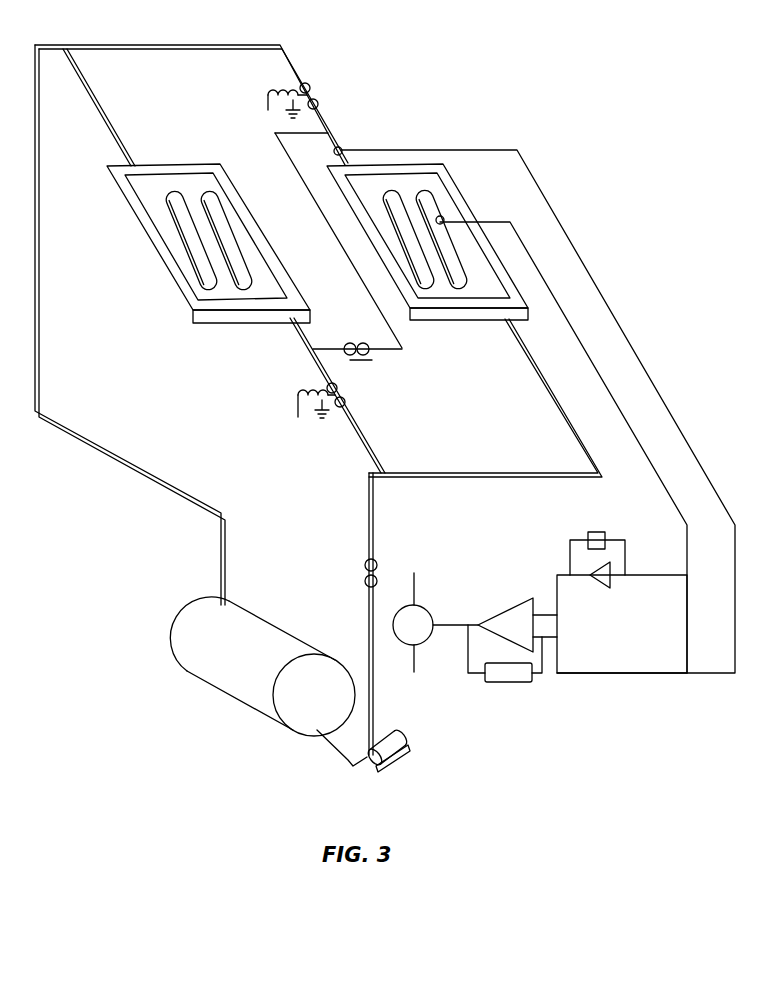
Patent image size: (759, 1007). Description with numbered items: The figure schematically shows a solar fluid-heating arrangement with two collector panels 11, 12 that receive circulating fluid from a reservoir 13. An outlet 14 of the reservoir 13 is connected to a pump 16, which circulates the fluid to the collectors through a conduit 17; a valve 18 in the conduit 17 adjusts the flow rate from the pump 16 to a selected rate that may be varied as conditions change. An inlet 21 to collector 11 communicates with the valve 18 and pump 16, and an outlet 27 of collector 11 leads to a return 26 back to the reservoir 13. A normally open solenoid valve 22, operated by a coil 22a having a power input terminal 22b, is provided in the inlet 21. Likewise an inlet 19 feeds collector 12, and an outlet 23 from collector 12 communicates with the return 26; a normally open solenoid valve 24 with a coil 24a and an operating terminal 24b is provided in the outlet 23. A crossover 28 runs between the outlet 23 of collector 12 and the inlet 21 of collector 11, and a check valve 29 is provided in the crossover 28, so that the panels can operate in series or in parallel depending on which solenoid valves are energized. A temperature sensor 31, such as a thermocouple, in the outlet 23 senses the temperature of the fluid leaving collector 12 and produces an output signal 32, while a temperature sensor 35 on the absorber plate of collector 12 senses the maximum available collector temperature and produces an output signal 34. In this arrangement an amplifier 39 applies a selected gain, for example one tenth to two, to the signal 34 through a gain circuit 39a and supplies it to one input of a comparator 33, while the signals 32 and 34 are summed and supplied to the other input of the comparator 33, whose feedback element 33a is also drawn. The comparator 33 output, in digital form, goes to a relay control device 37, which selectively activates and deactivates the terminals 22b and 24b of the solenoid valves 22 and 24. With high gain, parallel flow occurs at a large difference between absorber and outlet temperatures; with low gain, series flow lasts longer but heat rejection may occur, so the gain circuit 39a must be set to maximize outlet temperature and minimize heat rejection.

The collector panel 11 is at (147, 203).
The collector panel 12 is at (458, 282).
The reservoir 13 is at (262, 666).
The outlet 14 is at (335, 748).
The pump 16 is at (395, 760).
The conduit 17 is at (368, 620).
The valve 18 is at (364, 570).
The inlet 19 is at (530, 362).
The inlet 21 is at (300, 340).
The normally open solenoid valve 22 is at (350, 388).
The coil 22a is at (300, 390).
The power input terminal 22b is at (297, 417).
The outlet 23 is at (318, 106).
The normally open solenoid valve 24 is at (348, 78).
The coil 24a is at (284, 90).
The operating terminal 24b is at (266, 111).
The return 26 is at (205, 44).
The outlet 27 is at (137, 93).
The crossover 28 is at (297, 172).
The check valve 29 is at (360, 344).
The temperature sensor 31 is at (343, 149).
The output signal 32 is at (598, 222).
The comparator 33 is at (521, 612).
The feedback resistor 33a is at (500, 670).
The output signal 34 is at (572, 330).
The temperature sensor 35 is at (443, 218).
The relay control device 37 is at (435, 625).
The amplifier 39 is at (597, 585).
The gain circuit 39a is at (616, 518).